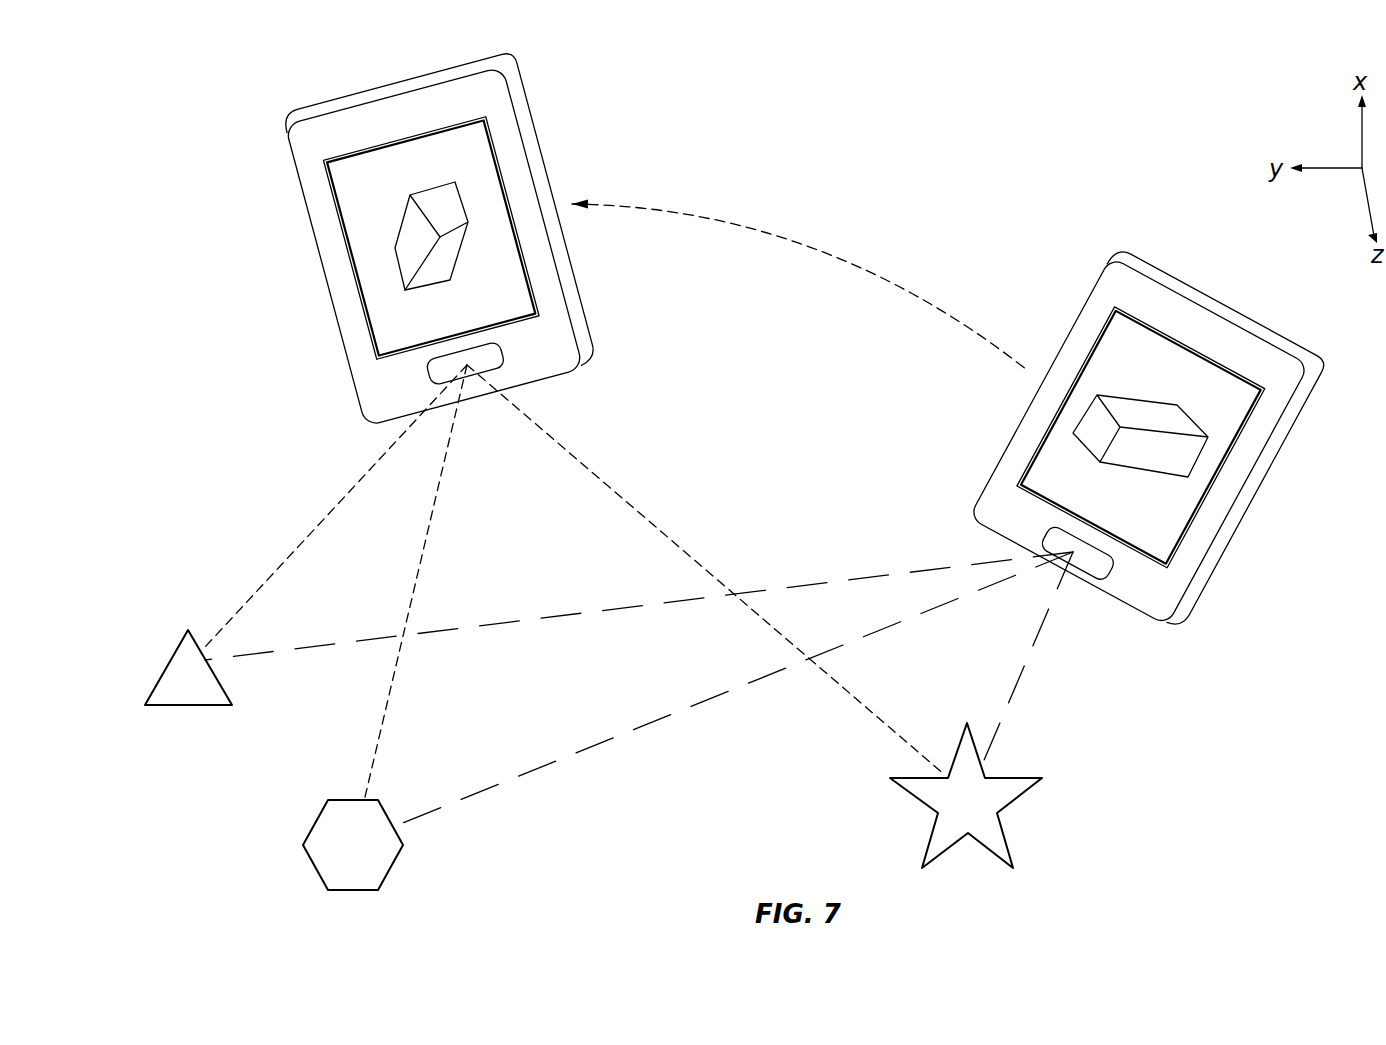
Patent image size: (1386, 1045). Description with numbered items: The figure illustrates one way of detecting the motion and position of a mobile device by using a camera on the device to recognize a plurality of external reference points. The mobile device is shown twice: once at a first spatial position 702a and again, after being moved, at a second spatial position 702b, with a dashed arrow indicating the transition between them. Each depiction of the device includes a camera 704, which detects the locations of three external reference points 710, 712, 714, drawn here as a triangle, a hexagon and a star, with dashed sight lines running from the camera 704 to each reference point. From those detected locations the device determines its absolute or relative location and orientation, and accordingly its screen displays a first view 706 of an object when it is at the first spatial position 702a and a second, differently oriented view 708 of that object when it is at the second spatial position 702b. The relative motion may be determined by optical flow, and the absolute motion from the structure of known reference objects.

The first spatial position 702a is at (1166, 439).
The second spatial position 702b is at (450, 238).
The camera 704 is at (785, 497).
The first view 706 is at (1209, 396).
The second view 708 is at (480, 193).
The external reference point 710 is at (209, 686).
The external reference point 712 is at (395, 845).
The external reference point 714 is at (1007, 795).